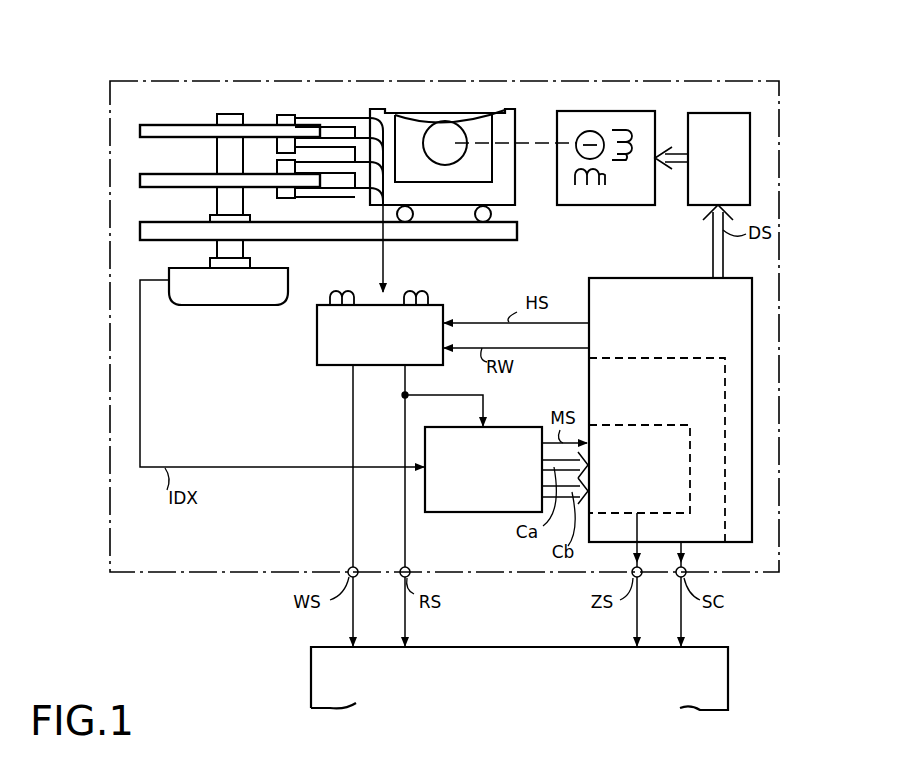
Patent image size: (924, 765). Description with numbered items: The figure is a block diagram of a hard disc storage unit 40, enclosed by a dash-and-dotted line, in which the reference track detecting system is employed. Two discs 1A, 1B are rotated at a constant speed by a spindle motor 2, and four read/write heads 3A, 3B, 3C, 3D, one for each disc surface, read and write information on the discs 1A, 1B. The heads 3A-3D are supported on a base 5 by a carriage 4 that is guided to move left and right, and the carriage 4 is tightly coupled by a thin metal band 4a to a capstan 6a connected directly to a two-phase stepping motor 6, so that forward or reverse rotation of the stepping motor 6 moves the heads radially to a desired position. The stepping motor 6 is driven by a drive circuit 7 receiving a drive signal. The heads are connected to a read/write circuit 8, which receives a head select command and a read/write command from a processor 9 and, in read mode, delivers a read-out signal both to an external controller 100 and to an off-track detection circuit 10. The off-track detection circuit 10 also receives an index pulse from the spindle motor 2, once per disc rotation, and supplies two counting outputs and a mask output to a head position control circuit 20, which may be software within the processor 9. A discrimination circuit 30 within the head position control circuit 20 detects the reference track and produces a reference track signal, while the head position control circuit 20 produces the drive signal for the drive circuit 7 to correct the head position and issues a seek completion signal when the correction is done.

The disc 1A is at (173, 125).
The disc 1B is at (148, 178).
The spindle motor 2 is at (205, 306).
The read/write head 3A is at (286, 120).
The read/write head 3B is at (282, 143).
The read/write head 3C is at (283, 166).
The read/write head 3D is at (288, 195).
The carriage 4 is at (456, 140).
The thin metal band 4a is at (405, 112).
The base 5 is at (141, 230).
The two-phase stepping motor 6 is at (620, 110).
The capstan 6a is at (448, 132).
The drive circuit 7 is at (752, 137).
The read/write circuit 8 is at (317, 338).
The processor 9 is at (752, 315).
The off-track detection circuit 10 is at (436, 513).
The head position control circuit 20 is at (725, 385).
The discrimination circuit 30 is at (690, 480).
The disc storage unit 40 is at (658, 81).
The controller 100 is at (730, 688).